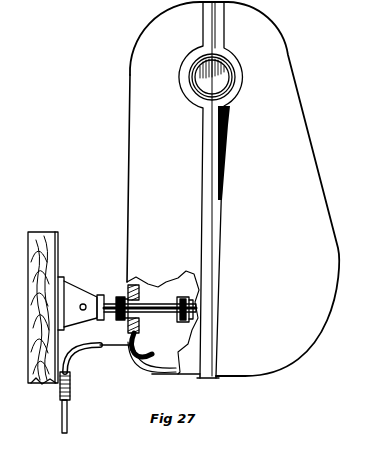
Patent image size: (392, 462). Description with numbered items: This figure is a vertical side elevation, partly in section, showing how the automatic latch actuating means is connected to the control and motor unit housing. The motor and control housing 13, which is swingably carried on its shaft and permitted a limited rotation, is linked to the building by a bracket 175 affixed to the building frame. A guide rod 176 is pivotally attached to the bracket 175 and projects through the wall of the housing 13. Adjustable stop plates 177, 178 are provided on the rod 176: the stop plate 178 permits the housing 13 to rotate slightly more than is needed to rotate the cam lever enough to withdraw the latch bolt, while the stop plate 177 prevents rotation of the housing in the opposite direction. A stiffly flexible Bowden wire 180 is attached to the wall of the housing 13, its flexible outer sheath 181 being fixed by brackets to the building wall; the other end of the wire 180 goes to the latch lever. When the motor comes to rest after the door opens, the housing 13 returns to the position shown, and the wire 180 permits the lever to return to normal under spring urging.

The motor and control housing 13 is at (128, 142).
The bracket 175 is at (63, 285).
The guide rod 176 is at (164, 300).
The stop plate 177 is at (122, 296).
The stop plate 178 is at (187, 298).
The stiffly flexible wire 180 is at (118, 350).
The flexible outer sheath 181 is at (71, 394).